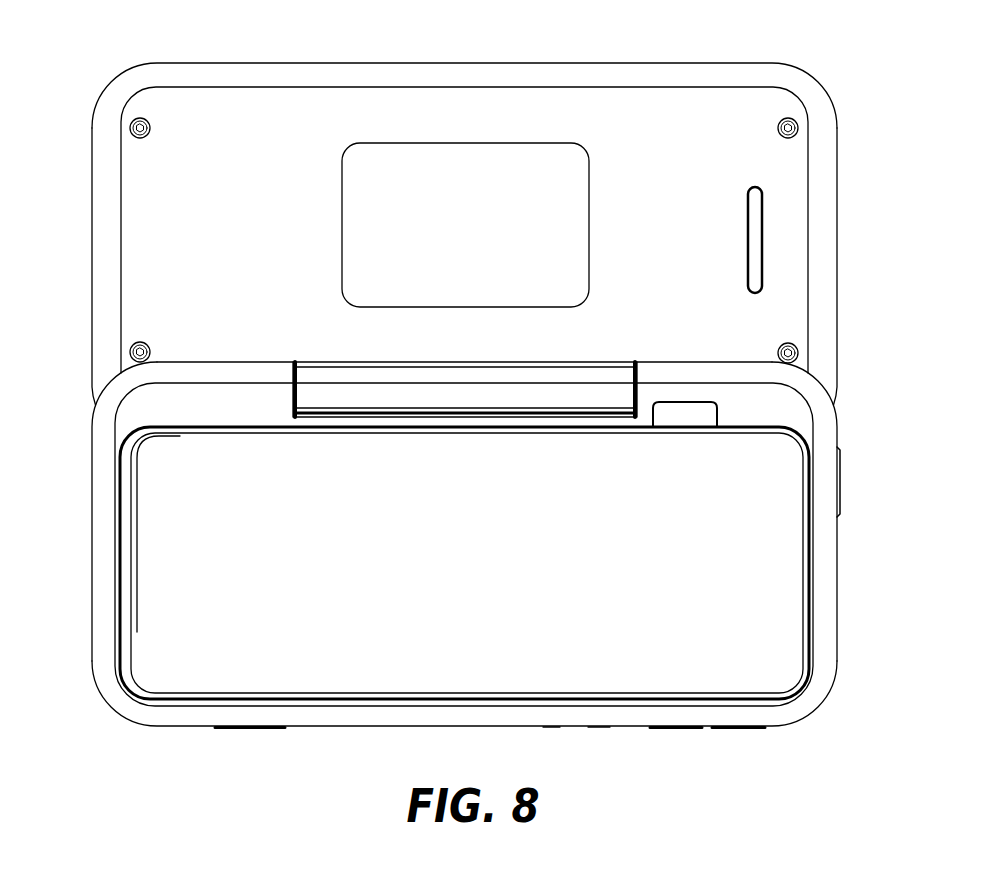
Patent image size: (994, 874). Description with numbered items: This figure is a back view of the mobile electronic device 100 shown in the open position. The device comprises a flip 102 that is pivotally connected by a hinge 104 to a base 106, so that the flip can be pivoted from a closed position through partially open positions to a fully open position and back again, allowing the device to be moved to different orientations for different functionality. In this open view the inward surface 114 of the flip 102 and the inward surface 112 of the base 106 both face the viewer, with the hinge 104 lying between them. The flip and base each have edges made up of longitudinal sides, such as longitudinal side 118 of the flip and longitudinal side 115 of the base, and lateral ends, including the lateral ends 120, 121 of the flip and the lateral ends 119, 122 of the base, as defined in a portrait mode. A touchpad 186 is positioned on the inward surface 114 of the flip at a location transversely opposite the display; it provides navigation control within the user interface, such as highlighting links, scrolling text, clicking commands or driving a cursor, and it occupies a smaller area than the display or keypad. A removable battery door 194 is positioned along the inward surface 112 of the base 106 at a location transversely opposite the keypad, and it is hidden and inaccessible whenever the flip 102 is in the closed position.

The mobile electronic device 100 is at (474, 551).
The flip 102 is at (465, 210).
The hinge 104 is at (560, 375).
The base 106 is at (817, 707).
The inward surface of the base 112 is at (842, 463).
The inward surface of the flip 114 is at (790, 159).
The longitudinal side 115 is at (688, 728).
The longitudinal side 118 is at (605, 62).
The lateral end 119 is at (837, 543).
The lateral end 120 is at (837, 242).
The lateral end 121 is at (92, 242).
The lateral end 122 is at (92, 603).
The touchpad 186 is at (353, 220).
The removable battery door 194 is at (782, 643).